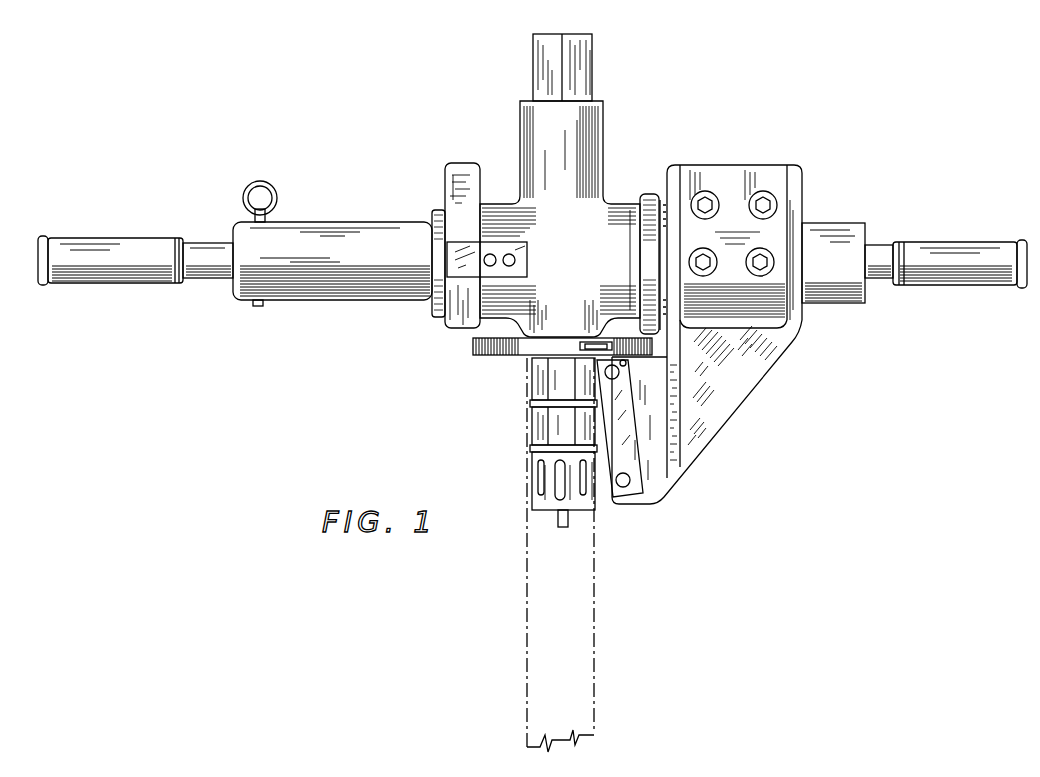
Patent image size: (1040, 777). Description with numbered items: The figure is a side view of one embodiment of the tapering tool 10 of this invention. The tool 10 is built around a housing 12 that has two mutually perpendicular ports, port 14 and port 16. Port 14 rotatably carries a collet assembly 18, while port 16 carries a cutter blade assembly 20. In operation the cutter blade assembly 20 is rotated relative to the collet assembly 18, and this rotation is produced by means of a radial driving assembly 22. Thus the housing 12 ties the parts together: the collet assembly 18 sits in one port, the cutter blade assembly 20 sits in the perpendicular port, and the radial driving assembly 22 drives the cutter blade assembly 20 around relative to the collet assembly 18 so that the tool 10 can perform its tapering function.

The tapering tool 10 is at (710, 117).
The housing 12 is at (603, 127).
The port 14 is at (530, 100).
The port 16 is at (663, 200).
The collet assembly 18 is at (628, 543).
The cutter blade assembly 20 is at (750, 438).
The radial driving assembly 22 is at (356, 188).